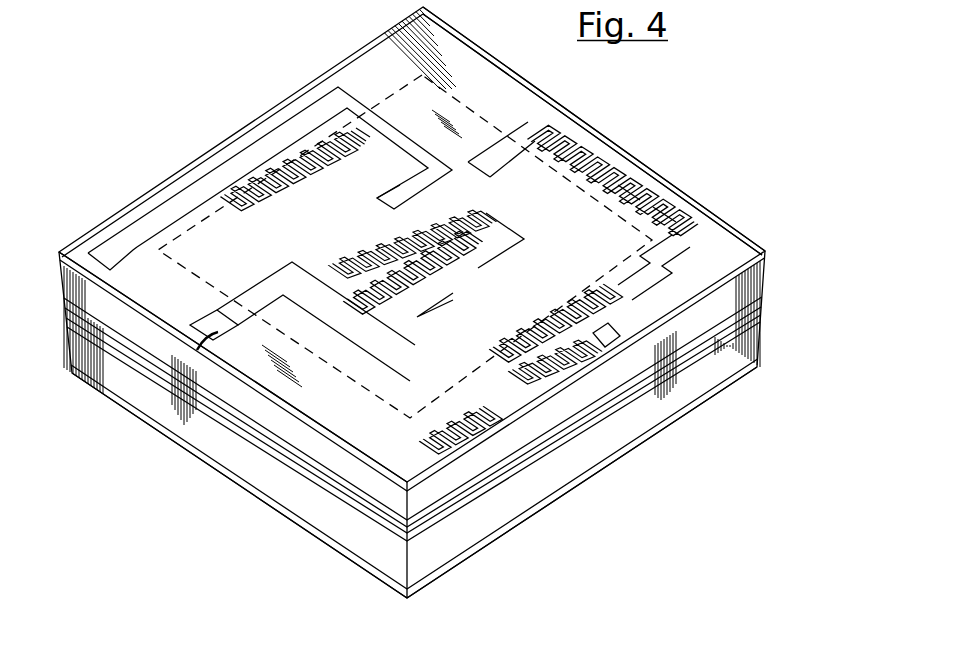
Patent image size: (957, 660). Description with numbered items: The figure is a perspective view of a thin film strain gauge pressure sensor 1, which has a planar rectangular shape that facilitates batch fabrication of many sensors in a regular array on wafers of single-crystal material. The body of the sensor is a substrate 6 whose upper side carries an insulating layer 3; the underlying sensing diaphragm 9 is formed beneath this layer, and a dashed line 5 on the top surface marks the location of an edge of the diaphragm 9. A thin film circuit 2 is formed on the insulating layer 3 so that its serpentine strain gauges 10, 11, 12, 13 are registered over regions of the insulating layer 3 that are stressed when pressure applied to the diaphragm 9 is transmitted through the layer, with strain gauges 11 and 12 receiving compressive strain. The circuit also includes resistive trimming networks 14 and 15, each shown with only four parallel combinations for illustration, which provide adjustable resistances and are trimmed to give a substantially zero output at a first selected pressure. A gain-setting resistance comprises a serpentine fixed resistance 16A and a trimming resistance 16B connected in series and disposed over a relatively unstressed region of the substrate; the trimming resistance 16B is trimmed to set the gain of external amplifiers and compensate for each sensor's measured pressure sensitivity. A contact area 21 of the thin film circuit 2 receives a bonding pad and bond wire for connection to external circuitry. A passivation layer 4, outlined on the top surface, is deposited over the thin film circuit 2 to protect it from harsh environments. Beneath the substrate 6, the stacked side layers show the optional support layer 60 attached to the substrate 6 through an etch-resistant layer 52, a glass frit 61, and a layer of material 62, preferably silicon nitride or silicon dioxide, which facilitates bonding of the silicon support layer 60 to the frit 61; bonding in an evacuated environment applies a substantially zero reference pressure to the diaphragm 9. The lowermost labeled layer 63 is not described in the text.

The pressure sensor 1 is at (198, 153).
The thin film circuit 2 is at (349, 90).
The insulating layer 3 is at (768, 256).
The passivation layer 4 is at (722, 238).
The dashed line 5 is at (250, 185).
The substrate 6 is at (766, 283).
The diaphragm 9 is at (518, 83).
The strain gauge 10 is at (538, 306).
The strain gauge 11 is at (432, 272).
The strain gauge 12 is at (380, 243).
The strain gauge 13 is at (305, 188).
The trimming network 14 is at (650, 195).
The trimming network 15 is at (603, 160).
The serpentine fixed resistance 16A is at (582, 362).
The trimming resistance 16B is at (482, 430).
The contact area 21 is at (108, 253).
The etch-resistant layer 52 is at (764, 298).
The support layer 60 is at (760, 338).
The frit 61 is at (763, 302).
The layer of material 62 is at (762, 313).
The bottom layer 63 is at (758, 367).